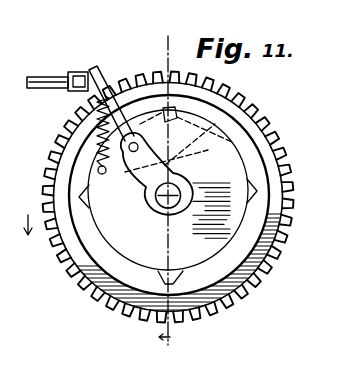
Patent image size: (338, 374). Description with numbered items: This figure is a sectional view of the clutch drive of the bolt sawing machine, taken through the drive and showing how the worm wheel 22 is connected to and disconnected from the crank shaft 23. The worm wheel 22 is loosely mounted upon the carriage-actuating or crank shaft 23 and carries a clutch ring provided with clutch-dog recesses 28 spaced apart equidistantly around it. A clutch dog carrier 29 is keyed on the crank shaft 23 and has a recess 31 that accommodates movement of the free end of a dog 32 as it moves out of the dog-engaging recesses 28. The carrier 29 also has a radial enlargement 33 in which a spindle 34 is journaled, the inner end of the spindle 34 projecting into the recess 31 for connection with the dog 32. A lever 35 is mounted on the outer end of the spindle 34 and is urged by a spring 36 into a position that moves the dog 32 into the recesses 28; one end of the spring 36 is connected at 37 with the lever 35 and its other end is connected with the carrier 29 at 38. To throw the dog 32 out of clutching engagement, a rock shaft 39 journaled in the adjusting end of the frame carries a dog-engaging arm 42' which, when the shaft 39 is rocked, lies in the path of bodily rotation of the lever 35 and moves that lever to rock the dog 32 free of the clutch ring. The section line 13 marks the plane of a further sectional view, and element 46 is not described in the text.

The pulley 13 is at (168, 195).
The worm wheel 22 is at (252, 286).
The crank shaft 23 is at (152, 214).
The clutch-dog recesses 28 is at (258, 190).
The clutch dog carrier 29 is at (275, 248).
The recess 31 is at (222, 133).
The dog 32 is at (125, 125).
The radial enlargement 33 is at (150, 170).
The spindle 34 is at (175, 160).
The lever 35 is at (96, 70).
The spring 36 is at (58, 134).
The spring connection to lever 37 is at (97, 99).
The spring connection to carrier 38 is at (98, 171).
The rock shaft 39 is at (42, 77).
The dog-engaging arm 42' is at (80, 64).
The disc 46 is at (256, 161).